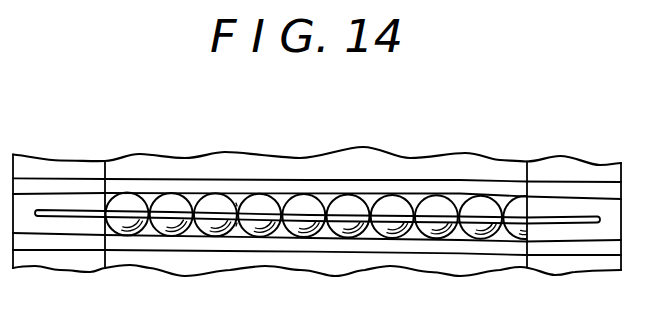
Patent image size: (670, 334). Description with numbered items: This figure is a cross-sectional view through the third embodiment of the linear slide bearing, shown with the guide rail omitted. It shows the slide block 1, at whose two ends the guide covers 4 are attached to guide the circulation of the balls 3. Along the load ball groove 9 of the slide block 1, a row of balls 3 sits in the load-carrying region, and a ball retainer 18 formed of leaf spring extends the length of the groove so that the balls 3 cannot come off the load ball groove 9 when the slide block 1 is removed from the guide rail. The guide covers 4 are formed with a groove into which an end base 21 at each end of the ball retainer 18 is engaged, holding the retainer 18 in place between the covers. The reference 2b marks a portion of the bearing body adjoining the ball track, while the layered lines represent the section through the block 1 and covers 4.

The slide block 1 is at (342, 151).
The raceway groove 2b is at (410, 172).
The balls 3 is at (147, 233).
The guide covers 4 is at (58, 154).
The load ball groove 9 is at (243, 238).
The ball retainer 18 is at (317, 217).
The end base 21 is at (55, 217).